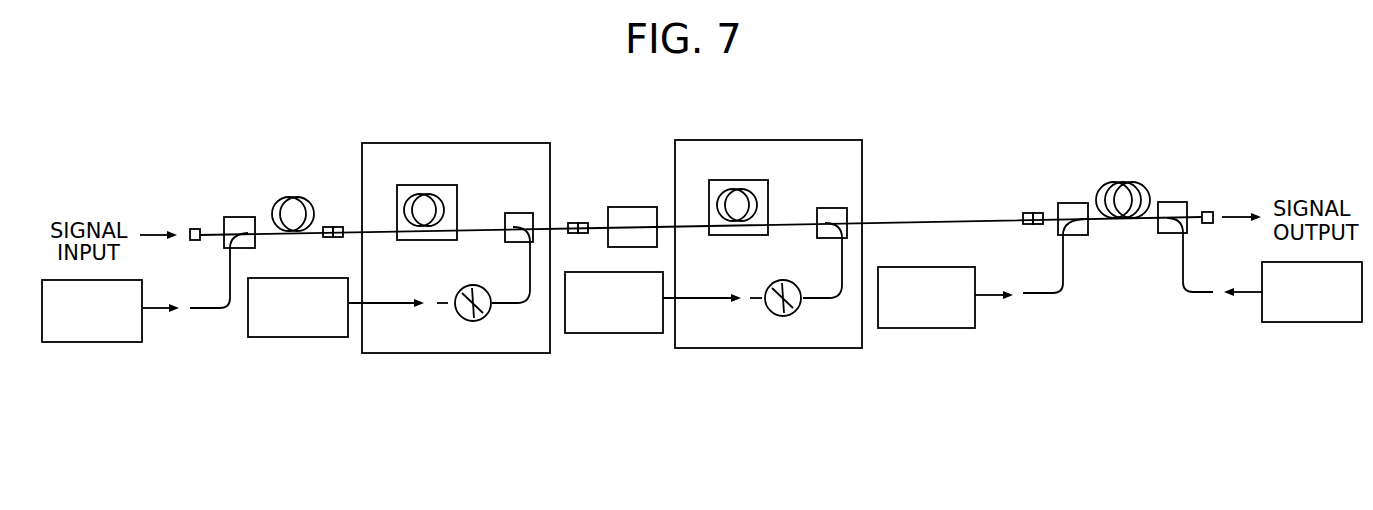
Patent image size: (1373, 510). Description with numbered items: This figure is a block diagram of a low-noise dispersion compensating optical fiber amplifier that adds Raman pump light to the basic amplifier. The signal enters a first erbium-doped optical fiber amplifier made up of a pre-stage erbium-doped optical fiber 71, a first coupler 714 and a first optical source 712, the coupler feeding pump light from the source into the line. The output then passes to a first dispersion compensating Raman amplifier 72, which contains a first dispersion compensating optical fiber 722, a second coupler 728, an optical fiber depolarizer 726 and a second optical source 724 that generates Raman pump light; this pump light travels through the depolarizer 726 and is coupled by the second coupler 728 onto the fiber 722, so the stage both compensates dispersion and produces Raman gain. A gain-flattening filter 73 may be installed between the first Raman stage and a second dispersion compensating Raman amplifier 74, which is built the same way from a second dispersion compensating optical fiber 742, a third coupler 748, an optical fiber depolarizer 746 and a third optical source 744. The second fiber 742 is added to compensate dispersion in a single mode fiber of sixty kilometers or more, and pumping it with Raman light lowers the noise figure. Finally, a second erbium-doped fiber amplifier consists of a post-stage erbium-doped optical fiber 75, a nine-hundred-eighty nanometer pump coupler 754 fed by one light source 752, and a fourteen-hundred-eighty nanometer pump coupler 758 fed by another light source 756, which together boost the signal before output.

The pre-stage erbium-doped optical fiber 71 is at (313, 208).
The first optical source 712 is at (97, 342).
The first coupler 714 is at (239, 217).
The first dispersion compensating Raman amplifier 72 is at (494, 142).
The first dispersion compensating optical fiber 722 is at (426, 242).
The second optical source 724 is at (300, 338).
The optical fiber depolarizer 726 is at (490, 310).
The second coupler 728 is at (513, 243).
The gain-flattening filter 73 is at (632, 207).
The second dispersion compensating Raman amplifier 74 is at (822, 140).
The second dispersion compensating optical fiber 742 is at (738, 237).
The third optical source 744 is at (613, 335).
The optical fiber depolarizer 746 is at (802, 303).
The third coupler 748 is at (827, 240).
The post-stage erbium-doped optical fiber 75 is at (1147, 193).
The light source 752 is at (932, 330).
The 980/1550 nm coupler 754 is at (1068, 202).
The light source 756 is at (1317, 323).
The 1480/1550 nm coupler 758 is at (1167, 235).